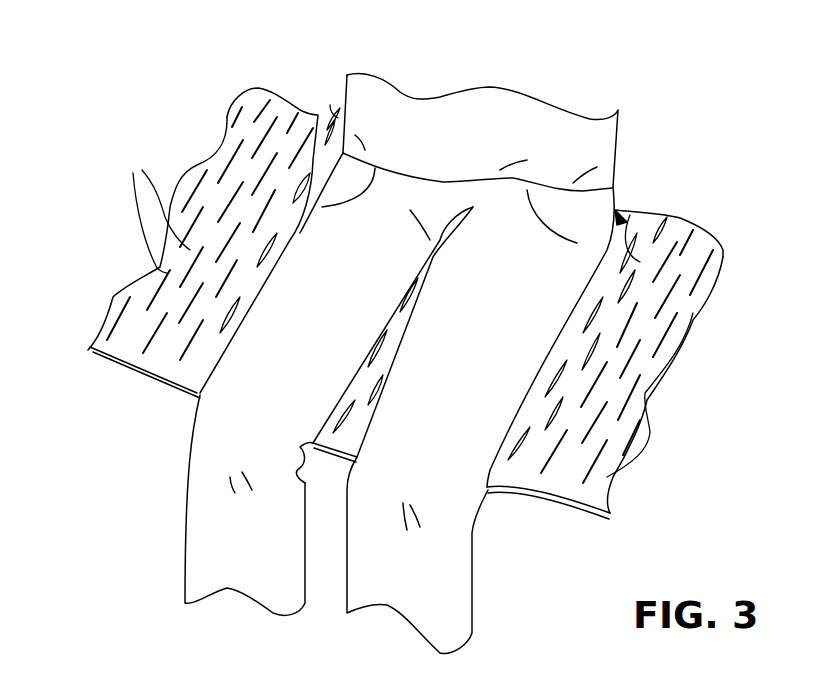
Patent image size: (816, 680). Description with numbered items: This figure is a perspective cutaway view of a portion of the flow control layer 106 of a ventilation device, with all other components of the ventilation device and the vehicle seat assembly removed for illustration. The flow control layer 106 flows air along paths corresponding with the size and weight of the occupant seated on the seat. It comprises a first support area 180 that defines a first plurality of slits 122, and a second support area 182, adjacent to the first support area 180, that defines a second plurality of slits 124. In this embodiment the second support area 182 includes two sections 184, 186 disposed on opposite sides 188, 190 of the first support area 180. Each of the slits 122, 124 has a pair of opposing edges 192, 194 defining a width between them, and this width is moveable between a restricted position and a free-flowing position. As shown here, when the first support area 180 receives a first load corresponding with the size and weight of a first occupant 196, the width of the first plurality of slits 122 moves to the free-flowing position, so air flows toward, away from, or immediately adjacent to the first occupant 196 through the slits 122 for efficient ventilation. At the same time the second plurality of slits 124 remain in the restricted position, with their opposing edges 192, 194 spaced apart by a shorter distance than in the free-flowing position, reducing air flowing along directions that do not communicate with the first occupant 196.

The flow control layer 106 is at (245, 96).
The first plurality of slits 122 is at (320, 148).
The second plurality of slits 124 is at (187, 195).
The first support area 180 is at (687, 105).
The second support area 182 is at (347, 50).
The section of second support area 184 is at (110, 360).
The section of second support area 186 is at (578, 505).
The side of first support area 188 is at (177, 383).
The side of first support area 190 is at (508, 488).
The opposing edge of slit 192 is at (630, 215).
The opposing edge of slit 194 is at (640, 262).
The first occupant 196 is at (330, 105).